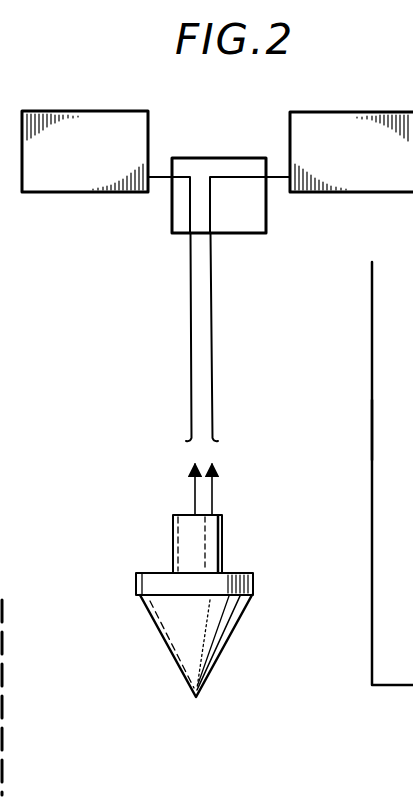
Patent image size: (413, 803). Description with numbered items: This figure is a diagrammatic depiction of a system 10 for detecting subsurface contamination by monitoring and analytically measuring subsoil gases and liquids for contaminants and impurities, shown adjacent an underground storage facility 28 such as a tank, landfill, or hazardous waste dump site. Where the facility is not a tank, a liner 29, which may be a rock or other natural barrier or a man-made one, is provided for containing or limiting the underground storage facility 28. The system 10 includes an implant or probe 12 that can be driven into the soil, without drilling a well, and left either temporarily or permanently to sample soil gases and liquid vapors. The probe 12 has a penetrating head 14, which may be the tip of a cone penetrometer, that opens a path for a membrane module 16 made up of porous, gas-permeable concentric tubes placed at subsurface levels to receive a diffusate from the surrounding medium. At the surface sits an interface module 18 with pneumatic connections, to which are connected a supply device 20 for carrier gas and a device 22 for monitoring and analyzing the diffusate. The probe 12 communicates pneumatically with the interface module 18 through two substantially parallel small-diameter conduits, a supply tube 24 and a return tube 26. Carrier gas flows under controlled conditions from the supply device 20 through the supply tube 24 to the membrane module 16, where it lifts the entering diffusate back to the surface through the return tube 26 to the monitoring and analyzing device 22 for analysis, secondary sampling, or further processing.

The system 10 is at (233, 151).
The probe 12 is at (181, 423).
The penetrating head 14 is at (163, 645).
The membrane module 16 is at (206, 549).
The interface module 18 is at (198, 172).
The supply device 20 is at (110, 78).
The monitoring and analyzing device 22 is at (386, 78).
The supply tube 24 is at (190, 341).
The return tube 26 is at (213, 350).
The underground storage facility 28 is at (410, 494).
The liner 29 is at (372, 432).